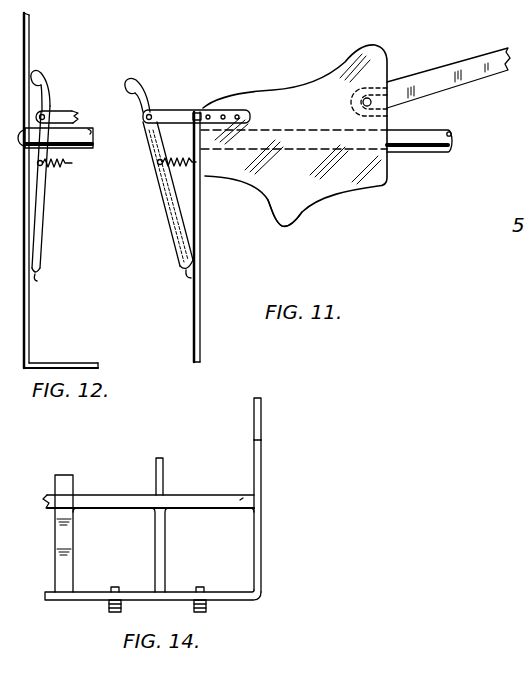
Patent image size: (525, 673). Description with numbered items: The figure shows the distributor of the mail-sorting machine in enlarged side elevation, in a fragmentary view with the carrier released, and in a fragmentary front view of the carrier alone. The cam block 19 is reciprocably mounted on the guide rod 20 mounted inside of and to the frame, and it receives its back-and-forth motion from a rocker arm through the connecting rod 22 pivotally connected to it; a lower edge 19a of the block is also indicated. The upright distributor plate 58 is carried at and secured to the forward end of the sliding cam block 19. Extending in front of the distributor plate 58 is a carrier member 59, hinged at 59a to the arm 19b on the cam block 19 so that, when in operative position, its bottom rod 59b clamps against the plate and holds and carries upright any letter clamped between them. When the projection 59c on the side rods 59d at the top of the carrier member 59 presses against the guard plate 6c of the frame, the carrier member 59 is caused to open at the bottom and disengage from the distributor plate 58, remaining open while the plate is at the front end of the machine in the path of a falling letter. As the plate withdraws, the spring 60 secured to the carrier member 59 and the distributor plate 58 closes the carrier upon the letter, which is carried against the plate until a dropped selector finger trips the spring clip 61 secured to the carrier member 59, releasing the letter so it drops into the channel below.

In FIG. 12, the guard plate 6c is at (25, 304).
In FIG. 11, the cam block 19 is at (295, 135).
In FIG. 11, the lower edge of plate 19a is at (324, 199).
In FIG. 12, the arm 19b is at (69, 110).
In FIG. 11, the arm 19b is at (196, 97).
In FIG. 12, the guide rod 20 is at (55, 138).
In FIG. 11, the guide rod 20 is at (427, 152).
In FIG. 11, the connecting rod 22 is at (447, 73).
In FIG. 11, the distributor plate 58 is at (193, 306).
In FIG. 11, the carrier member 59 is at (177, 226).
In FIG. 14, the hinge 59a is at (261, 443).
In FIG. 14, the bottom rod 59b is at (182, 591).
In FIG. 12, the projection 59c is at (42, 84).
In FIG. 11, the projection 59c is at (152, 64).
In FIG. 14, the projection 59c is at (258, 419).
In FIG. 14, the side rod 59d is at (259, 545).
In FIG. 12, the spring 60 is at (60, 166).
In FIG. 11, the spring 60 is at (175, 168).
In FIG. 11, the spring clip 61 is at (178, 202).
In FIG. 14, the spring clip 61 is at (71, 478).